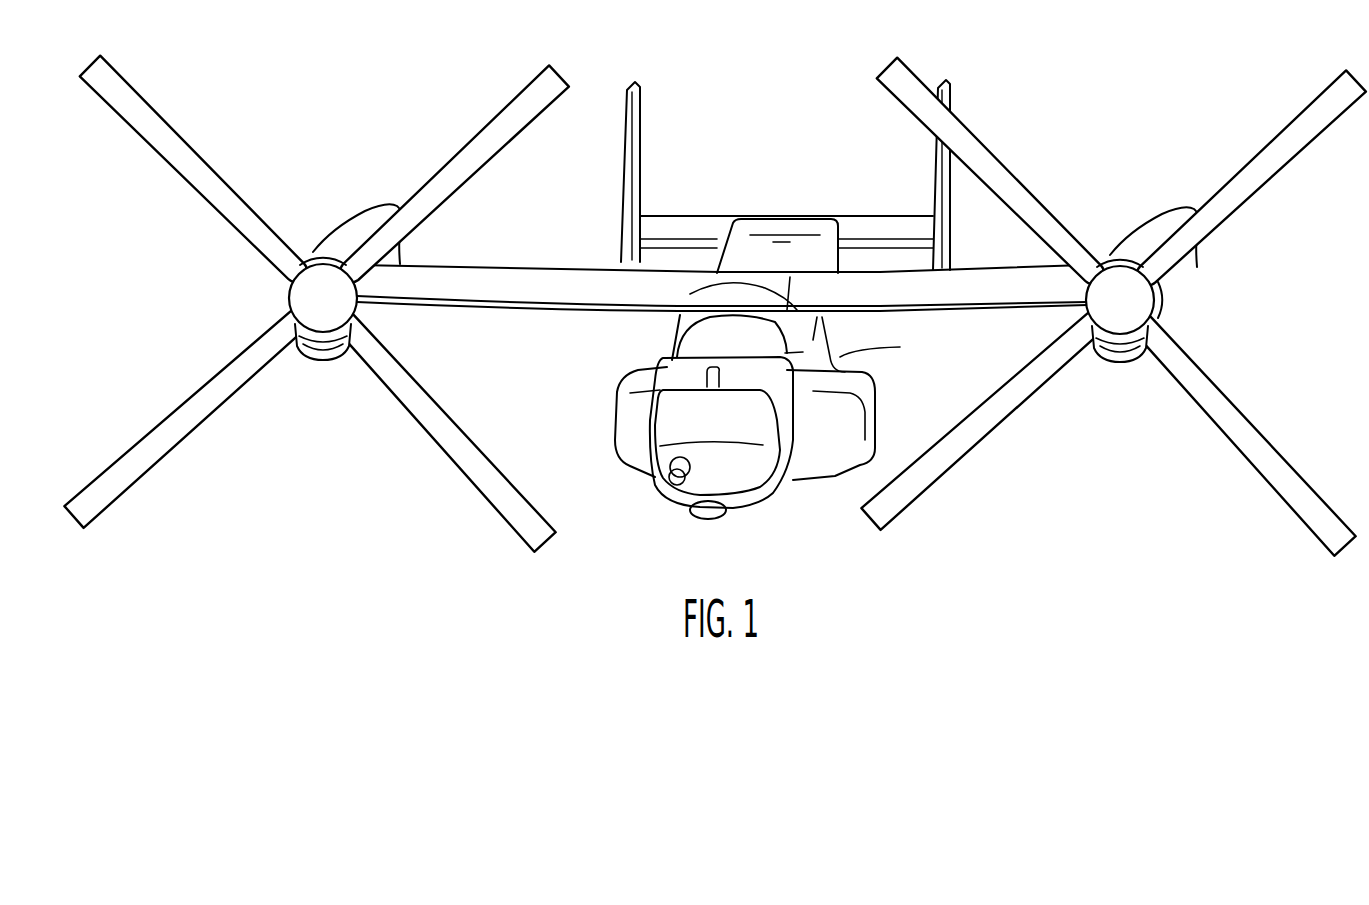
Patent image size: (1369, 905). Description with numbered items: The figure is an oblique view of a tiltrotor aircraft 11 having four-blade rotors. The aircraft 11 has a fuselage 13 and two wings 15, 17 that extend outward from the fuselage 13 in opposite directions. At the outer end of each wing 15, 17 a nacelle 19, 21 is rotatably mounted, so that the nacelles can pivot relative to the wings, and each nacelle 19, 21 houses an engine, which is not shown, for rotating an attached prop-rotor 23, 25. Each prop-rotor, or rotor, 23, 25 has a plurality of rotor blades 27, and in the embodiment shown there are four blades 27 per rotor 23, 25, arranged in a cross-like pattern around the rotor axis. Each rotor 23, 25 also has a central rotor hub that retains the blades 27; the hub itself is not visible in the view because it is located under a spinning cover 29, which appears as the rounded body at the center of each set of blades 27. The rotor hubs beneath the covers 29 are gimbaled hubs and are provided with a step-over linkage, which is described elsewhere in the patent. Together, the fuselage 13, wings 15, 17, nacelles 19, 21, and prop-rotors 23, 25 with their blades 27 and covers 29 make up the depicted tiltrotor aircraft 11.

The aircraft 11 is at (715, 322).
The fuselage 13 is at (840, 357).
The wing 15 is at (540, 290).
The wing 17 is at (1000, 287).
The nacelle 19 is at (348, 232).
The nacelle 21 is at (1185, 272).
The prop-rotor 23 is at (320, 318).
The prop-rotor 25 is at (1117, 322).
The rotor blades 27 is at (165, 455).
The spinning cover 29 is at (300, 300).